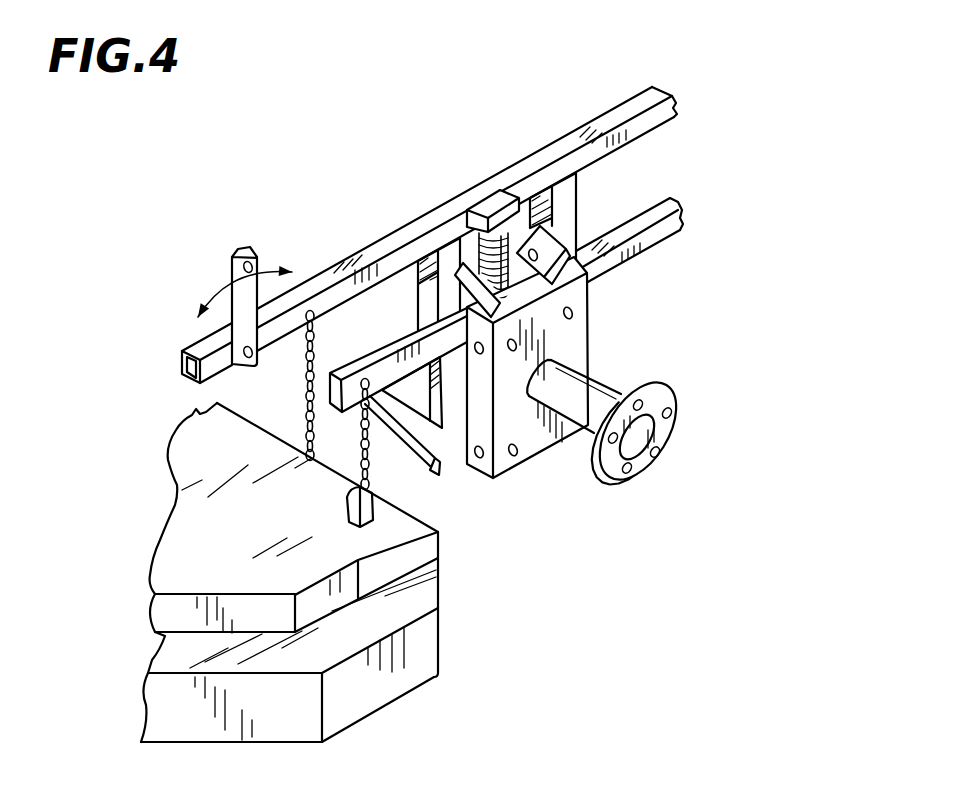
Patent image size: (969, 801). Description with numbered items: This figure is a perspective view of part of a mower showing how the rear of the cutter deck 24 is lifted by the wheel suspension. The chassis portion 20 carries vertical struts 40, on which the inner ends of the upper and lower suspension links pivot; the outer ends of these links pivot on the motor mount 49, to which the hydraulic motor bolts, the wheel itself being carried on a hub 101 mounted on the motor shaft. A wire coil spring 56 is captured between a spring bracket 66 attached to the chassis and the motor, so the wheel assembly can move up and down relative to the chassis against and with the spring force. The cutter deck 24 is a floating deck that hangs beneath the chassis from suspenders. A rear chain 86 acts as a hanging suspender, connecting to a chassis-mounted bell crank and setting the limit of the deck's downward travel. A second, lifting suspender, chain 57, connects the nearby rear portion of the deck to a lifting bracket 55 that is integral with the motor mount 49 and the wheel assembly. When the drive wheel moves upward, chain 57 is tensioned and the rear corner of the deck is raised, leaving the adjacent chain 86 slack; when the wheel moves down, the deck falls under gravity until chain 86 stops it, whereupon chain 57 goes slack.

The frame assembly 20 is at (432, 217).
The vertical strut 40 is at (567, 198).
The rear chain 86 is at (305, 362).
The spring bracket 66 is at (490, 204).
The spring 56 is at (450, 205).
The motor mount 49 is at (588, 338).
The hub 101 is at (670, 420).
The lifting bracket 55 is at (452, 473).
The chain 57 is at (403, 473).
The cutter deck 24 is at (425, 594).